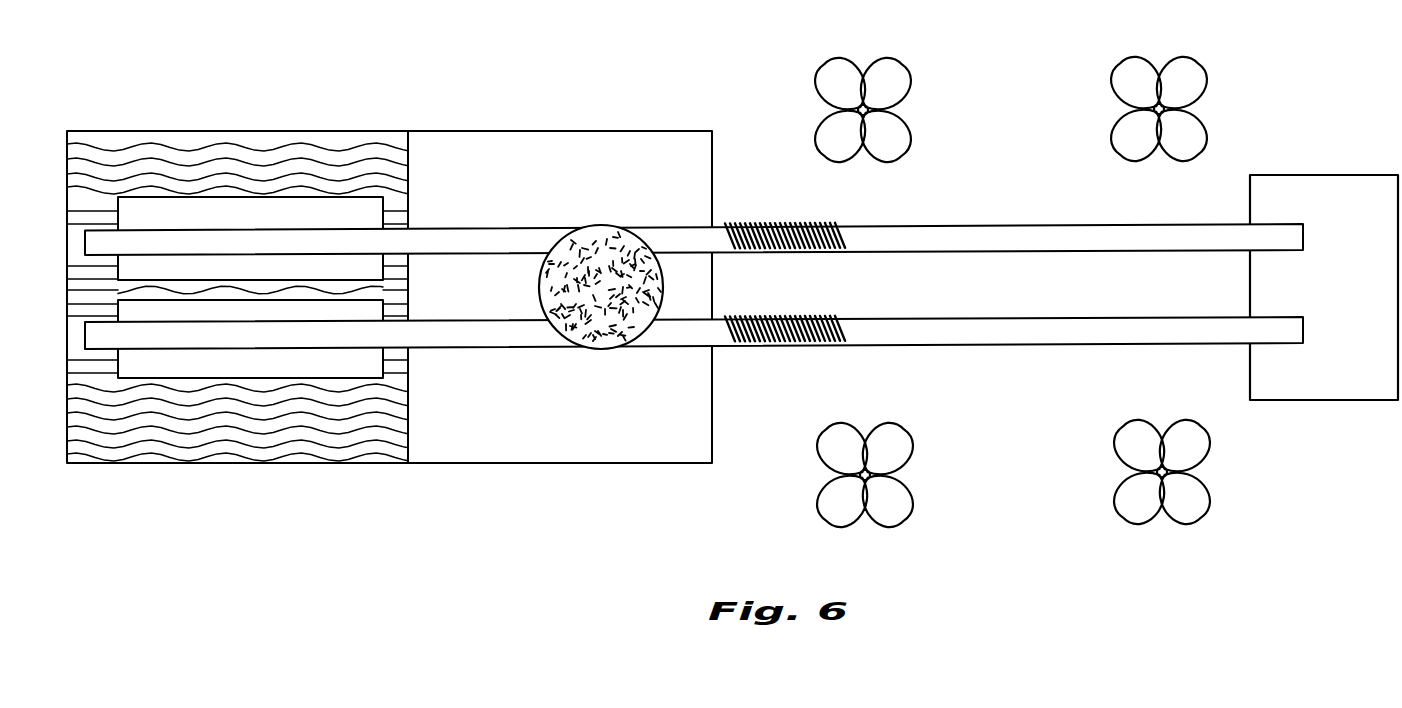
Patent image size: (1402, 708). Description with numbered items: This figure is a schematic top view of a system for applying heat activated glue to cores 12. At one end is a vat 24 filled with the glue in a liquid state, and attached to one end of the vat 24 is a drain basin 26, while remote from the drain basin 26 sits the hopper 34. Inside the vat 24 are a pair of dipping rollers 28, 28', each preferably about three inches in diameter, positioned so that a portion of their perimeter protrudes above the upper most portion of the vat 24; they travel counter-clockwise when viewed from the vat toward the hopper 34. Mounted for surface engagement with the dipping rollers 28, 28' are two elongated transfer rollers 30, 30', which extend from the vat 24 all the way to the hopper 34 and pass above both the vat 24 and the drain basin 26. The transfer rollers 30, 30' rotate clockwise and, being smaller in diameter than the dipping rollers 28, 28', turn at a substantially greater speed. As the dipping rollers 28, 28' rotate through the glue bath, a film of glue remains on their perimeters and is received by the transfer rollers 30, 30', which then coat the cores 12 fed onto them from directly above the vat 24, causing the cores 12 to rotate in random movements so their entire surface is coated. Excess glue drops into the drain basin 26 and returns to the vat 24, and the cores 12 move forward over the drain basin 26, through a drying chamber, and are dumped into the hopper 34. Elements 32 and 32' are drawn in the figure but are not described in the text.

The core 12 is at (598, 226).
The vat 24 is at (331, 130).
The drain basin 26 is at (533, 177).
The dipping roller 28 is at (250, 160).
The dipping roller 28' is at (250, 418).
The transfer roller 30 is at (694, 158).
The transfer roller 30' is at (694, 415).
The upper propellers 32 is at (1011, 90).
The lower propellers 32' is at (1013, 494).
The hopper 34 is at (1295, 190).